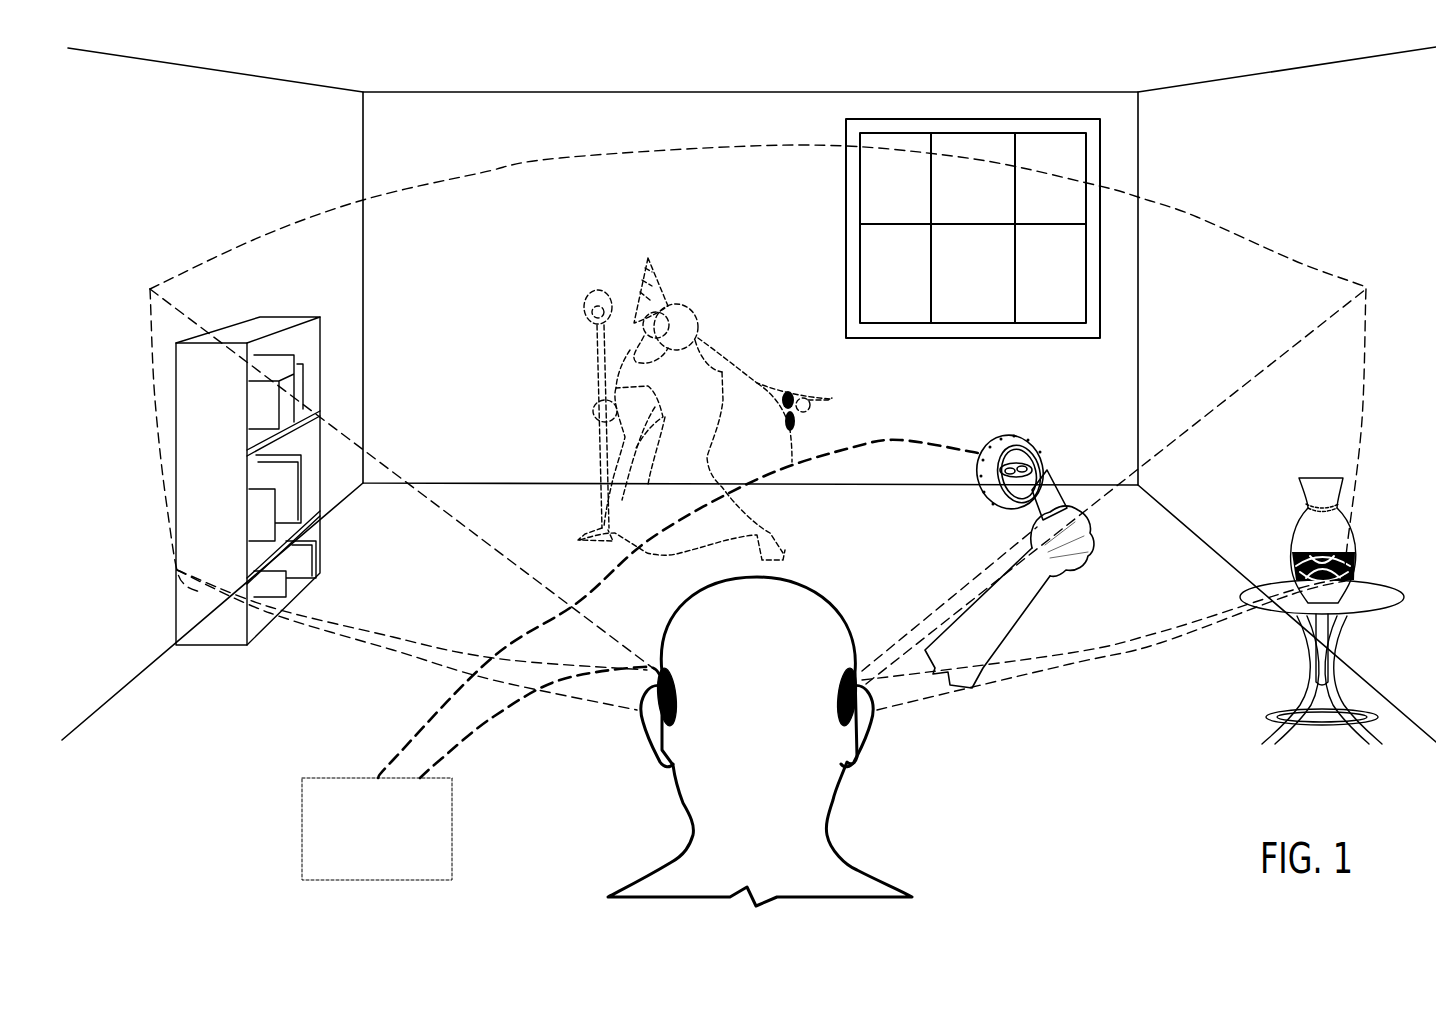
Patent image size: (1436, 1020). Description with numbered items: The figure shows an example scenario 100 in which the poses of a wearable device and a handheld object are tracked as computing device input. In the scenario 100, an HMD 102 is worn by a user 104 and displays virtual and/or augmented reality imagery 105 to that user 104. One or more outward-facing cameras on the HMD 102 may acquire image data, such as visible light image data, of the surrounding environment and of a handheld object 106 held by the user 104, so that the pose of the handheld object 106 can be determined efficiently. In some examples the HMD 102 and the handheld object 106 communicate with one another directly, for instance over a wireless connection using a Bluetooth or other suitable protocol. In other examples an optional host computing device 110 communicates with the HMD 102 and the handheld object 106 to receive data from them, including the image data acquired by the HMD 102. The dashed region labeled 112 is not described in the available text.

The example scenario 100 is at (698, 110).
The HMD 102 is at (657, 735).
The user 104 is at (777, 726).
The virtual and/or augmented reality imagery 105 is at (698, 298).
The handheld object 106 is at (978, 496).
The host computing device 110 is at (425, 856).
The tracking volume 112 is at (1198, 216).